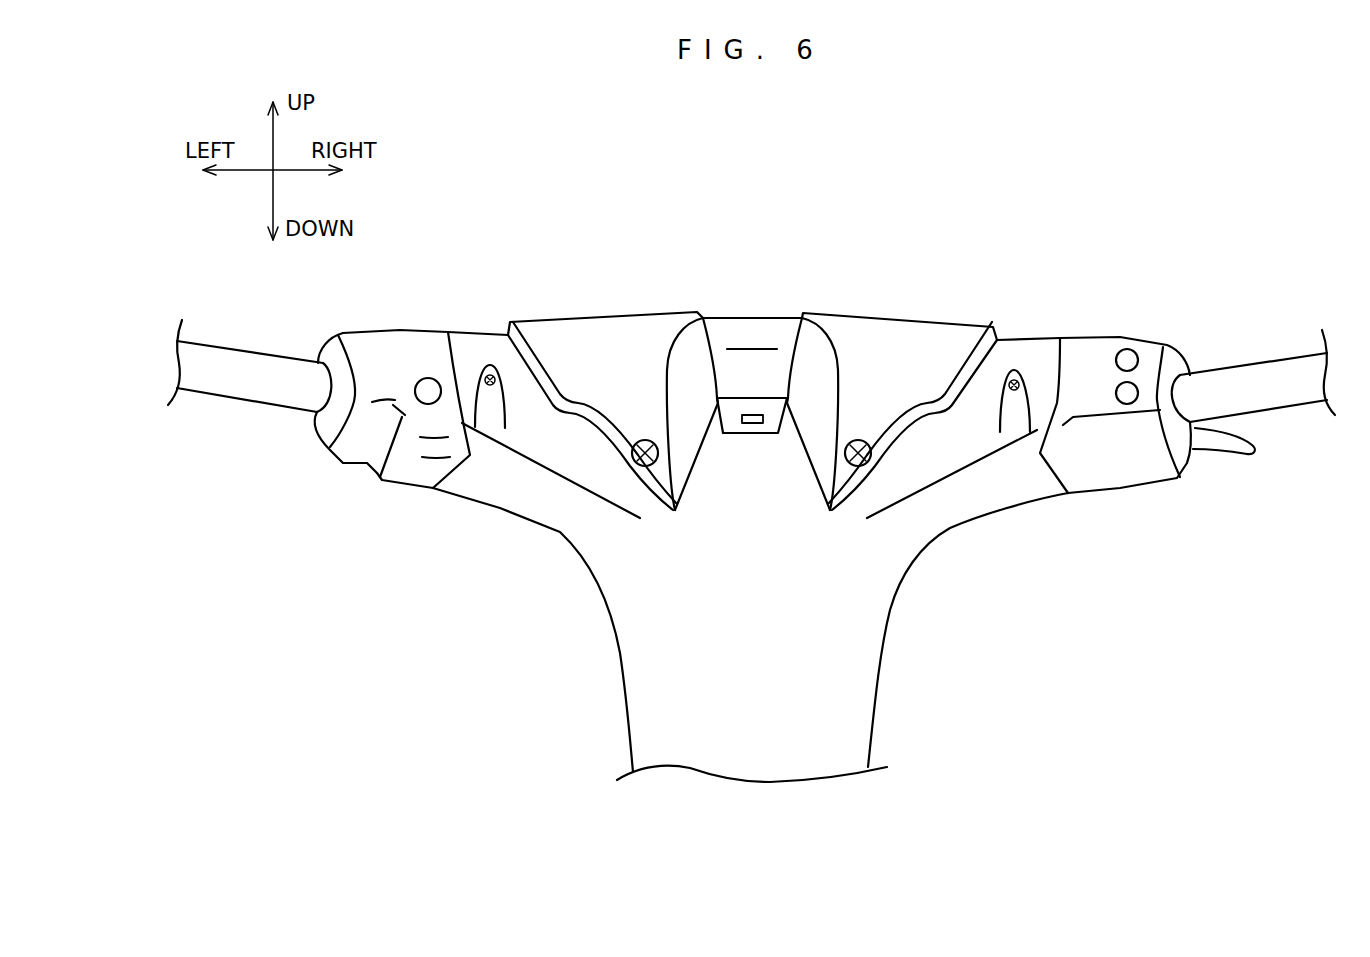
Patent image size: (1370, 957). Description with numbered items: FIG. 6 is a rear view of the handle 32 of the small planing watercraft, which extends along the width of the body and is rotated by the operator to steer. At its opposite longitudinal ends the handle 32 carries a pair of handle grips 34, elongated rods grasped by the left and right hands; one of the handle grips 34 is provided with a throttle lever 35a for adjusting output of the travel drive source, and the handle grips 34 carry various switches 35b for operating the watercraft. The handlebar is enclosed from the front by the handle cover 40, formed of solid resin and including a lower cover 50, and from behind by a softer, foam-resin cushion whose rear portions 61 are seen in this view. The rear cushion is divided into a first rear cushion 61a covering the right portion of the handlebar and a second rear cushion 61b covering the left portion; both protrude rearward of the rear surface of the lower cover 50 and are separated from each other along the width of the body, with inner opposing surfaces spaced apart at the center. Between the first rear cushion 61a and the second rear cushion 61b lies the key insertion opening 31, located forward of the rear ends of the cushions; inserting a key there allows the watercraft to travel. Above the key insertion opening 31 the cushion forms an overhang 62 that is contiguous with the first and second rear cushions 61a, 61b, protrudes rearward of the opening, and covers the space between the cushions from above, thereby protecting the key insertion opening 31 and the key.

The key insertion opening 31 is at (753, 437).
The handle 32 is at (1078, 297).
The handle grips 34 is at (245, 358).
The throttle lever 35a is at (1225, 455).
The switches 35b is at (428, 377).
The handle cover 40 is at (750, 635).
The lower cover 50 is at (872, 603).
The rear cushion 61 is at (752, 381).
The first rear cushion 61a is at (934, 340).
The second rear cushion 61b is at (569, 340).
The overhang 62 is at (753, 332).